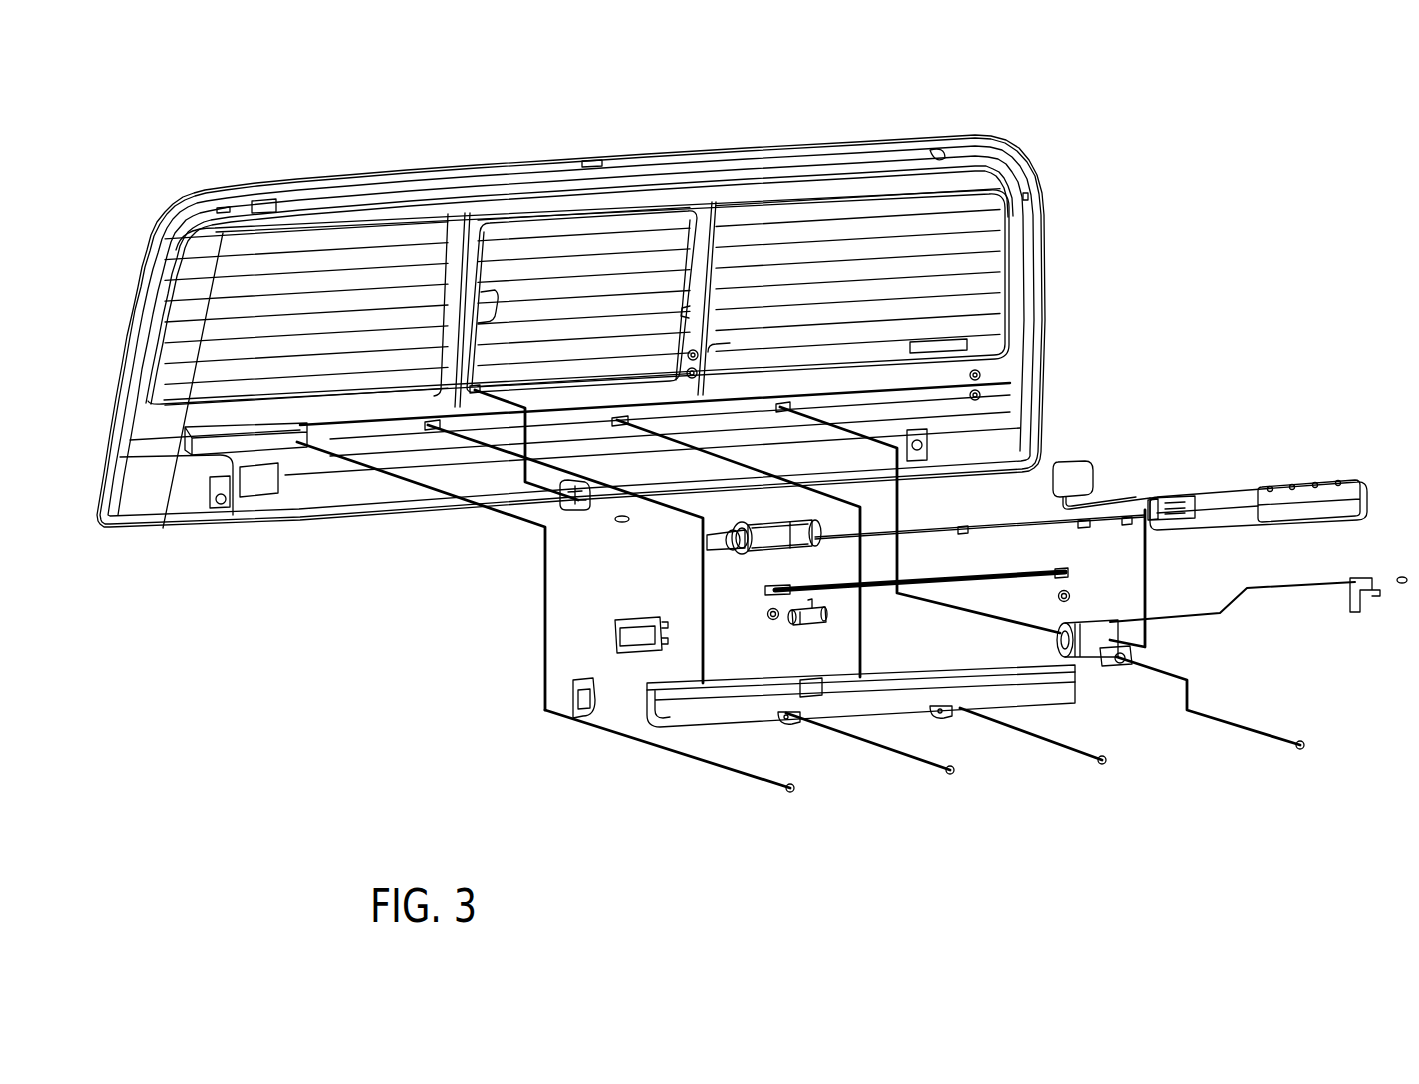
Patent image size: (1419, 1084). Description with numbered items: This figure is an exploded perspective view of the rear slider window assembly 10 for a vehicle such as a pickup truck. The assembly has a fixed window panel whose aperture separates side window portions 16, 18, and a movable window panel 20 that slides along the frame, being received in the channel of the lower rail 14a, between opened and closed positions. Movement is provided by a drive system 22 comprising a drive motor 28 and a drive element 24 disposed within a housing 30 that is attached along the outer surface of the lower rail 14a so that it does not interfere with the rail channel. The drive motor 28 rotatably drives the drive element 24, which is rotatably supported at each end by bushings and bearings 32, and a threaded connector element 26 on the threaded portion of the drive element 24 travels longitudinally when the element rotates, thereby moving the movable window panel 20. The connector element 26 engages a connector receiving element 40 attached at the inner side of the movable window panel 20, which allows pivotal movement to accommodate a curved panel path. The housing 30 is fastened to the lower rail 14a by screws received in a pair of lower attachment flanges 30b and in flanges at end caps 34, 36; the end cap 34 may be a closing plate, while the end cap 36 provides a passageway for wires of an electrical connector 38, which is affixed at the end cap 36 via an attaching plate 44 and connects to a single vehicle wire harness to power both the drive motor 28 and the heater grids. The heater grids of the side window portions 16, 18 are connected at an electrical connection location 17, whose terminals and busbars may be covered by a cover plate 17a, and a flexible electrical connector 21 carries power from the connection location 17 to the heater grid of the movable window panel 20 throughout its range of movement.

The rear slider window assembly 10 is at (1130, 200).
The lower rail 14a is at (280, 440).
The side window portion 16 is at (895, 243).
The electrical connection location 17 is at (984, 397).
The cover plate 17a is at (1310, 500).
The side window portion 18 is at (310, 297).
The movable window panel 20 is at (636, 258).
The flexible electrical connector 21 is at (1242, 493).
The drive system 22 is at (807, 807).
The drive element 24 is at (868, 590).
The threaded connector element 26 is at (810, 620).
The drive motor 28 is at (767, 528).
The housing 30 is at (900, 695).
The lower attachment flanges 30b is at (790, 720).
The bushings and bearings 32 is at (768, 613).
The end cap 34 is at (573, 697).
The end cap 36 is at (1087, 657).
The electrical connector 38 is at (1160, 500).
The connector receiving element 40 is at (574, 512).
The attaching plate 44 is at (1356, 608).